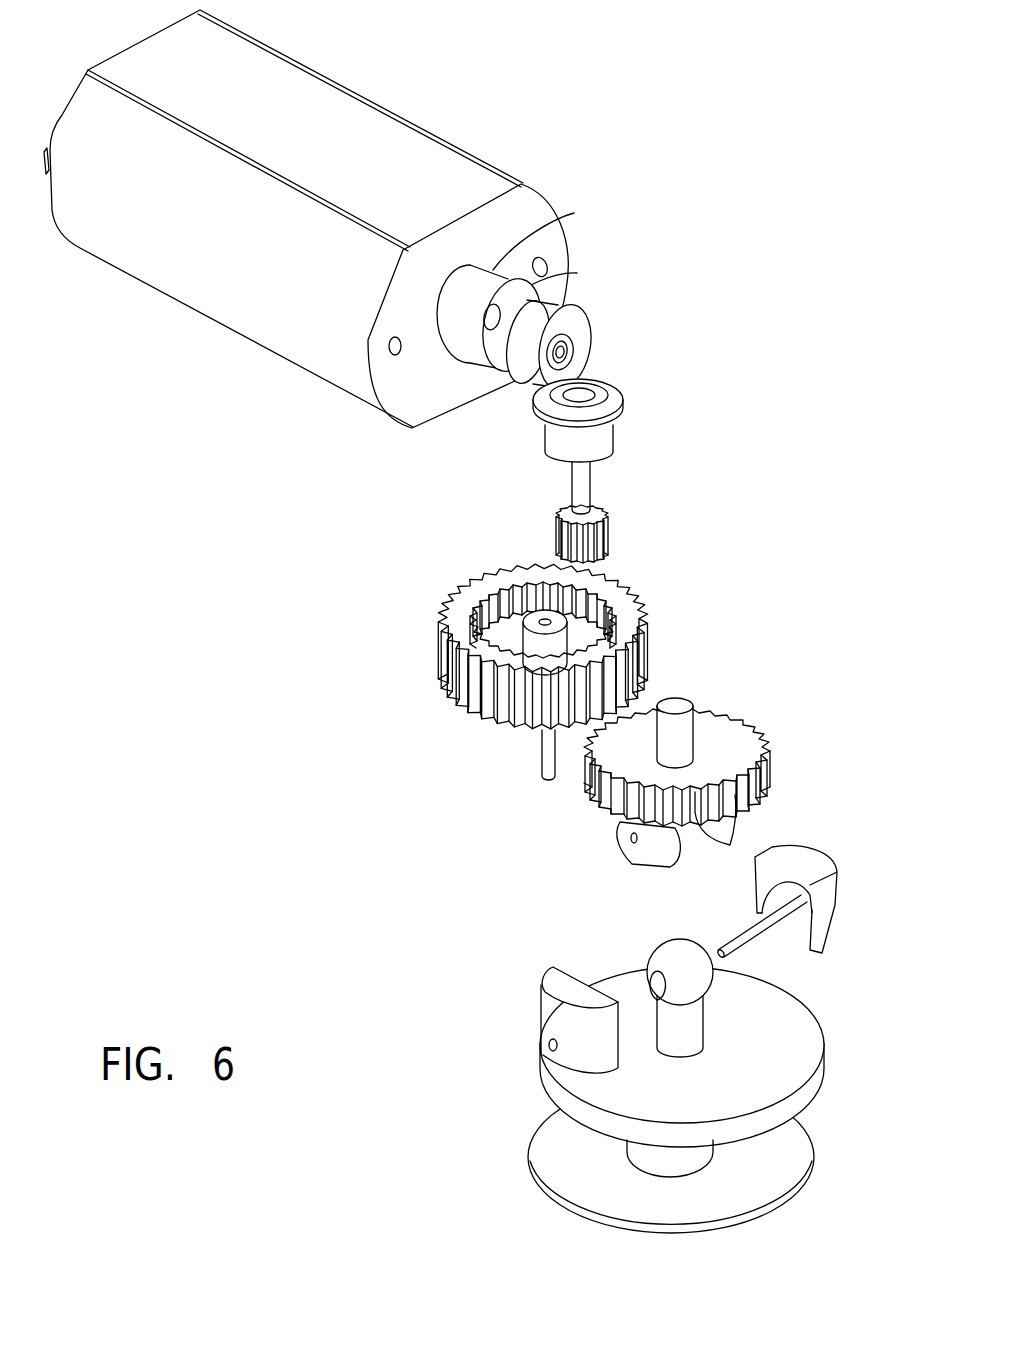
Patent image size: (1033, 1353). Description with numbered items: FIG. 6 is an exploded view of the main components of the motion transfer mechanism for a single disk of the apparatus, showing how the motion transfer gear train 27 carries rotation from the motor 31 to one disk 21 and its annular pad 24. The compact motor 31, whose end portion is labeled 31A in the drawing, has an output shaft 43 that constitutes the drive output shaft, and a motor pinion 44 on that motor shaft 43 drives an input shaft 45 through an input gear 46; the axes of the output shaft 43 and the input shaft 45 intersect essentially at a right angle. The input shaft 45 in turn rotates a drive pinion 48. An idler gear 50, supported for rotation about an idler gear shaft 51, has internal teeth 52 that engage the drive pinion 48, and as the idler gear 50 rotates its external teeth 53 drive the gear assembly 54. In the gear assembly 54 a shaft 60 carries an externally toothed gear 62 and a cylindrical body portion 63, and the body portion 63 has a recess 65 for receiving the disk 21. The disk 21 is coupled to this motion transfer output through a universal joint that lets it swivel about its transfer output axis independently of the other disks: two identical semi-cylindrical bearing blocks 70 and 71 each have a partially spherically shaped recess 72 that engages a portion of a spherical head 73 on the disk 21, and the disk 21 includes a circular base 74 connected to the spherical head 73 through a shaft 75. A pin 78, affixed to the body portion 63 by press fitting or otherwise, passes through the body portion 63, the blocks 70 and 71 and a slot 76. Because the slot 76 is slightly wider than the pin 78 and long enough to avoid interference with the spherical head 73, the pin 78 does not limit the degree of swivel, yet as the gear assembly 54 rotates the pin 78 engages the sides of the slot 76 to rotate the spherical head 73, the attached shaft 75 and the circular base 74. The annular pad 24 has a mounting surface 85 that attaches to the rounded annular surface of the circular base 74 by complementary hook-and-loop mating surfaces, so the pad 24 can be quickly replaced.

The disk 21 is at (780, 1032).
The annular pad 24 is at (775, 1205).
The motion transfer gear train 27 is at (755, 455).
The motor 31 is at (338, 219).
The motor front end 31A is at (574, 213).
The output shaft 43 is at (590, 272).
The motor pinion 44 is at (572, 325).
The input shaft 45 is at (578, 487).
The input gear 46 is at (612, 400).
The drive pinion 48 is at (598, 510).
The idler gear 50 is at (513, 668).
The idler gear shaft 51 is at (540, 738).
The internal teeth 52 is at (470, 585).
The external teeth 53 is at (440, 650).
The gear assembly 54 is at (705, 773).
The shaft 60 is at (683, 700).
The externally toothed gear 62 is at (765, 770).
The cylindrical body portion 63 is at (622, 845).
The recess 65 is at (702, 828).
The semi-cylindrical bearing block 70 is at (545, 1023).
The semi-cylindrical bearing block 71 is at (820, 875).
The partially spherically shaped recess 72 is at (780, 893).
The spherical head 73 is at (607, 983).
The circular base 74 is at (818, 1070).
The shaft 75 is at (687, 1035).
The slot 76 is at (647, 982).
The pin 78 is at (760, 940).
The mounting surface 85 is at (595, 1172).